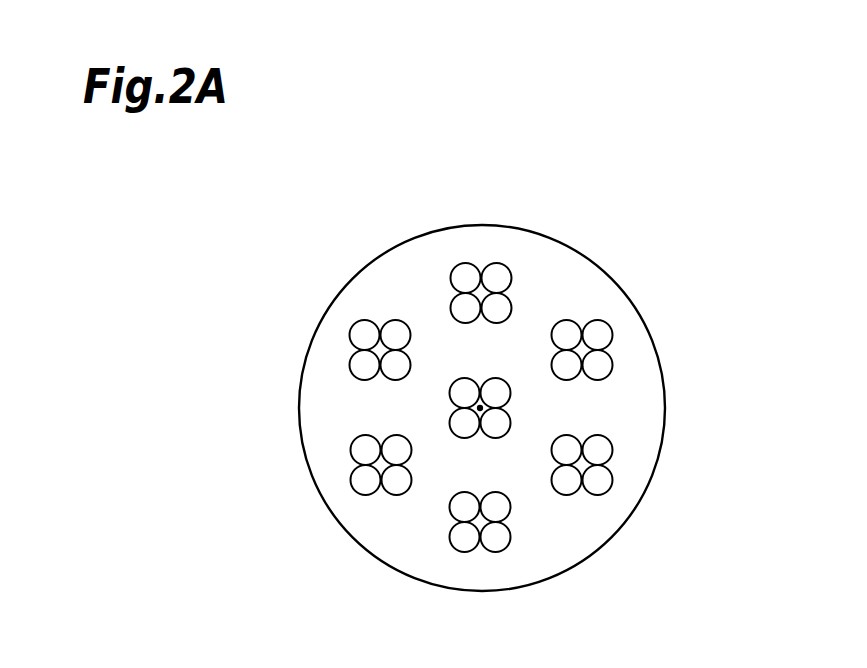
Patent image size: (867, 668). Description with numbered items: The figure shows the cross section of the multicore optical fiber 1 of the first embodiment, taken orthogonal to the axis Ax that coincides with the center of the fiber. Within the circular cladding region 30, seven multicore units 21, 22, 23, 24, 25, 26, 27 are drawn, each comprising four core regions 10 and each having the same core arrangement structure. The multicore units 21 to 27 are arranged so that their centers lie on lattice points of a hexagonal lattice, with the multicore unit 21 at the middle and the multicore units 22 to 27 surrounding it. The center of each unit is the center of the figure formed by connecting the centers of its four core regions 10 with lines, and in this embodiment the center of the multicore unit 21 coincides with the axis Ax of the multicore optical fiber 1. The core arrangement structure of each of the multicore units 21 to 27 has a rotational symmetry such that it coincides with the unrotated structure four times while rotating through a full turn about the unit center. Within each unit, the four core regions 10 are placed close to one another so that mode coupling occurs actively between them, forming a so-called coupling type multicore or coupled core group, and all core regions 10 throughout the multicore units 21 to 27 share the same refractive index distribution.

The multicore optical fiber 1 is at (630, 198).
The core region 10 is at (394, 330).
The multicore unit 21 is at (450, 390).
The multicore unit 22 is at (363, 317).
The multicore unit 23 is at (497, 262).
The multicore unit 24 is at (600, 317).
The multicore unit 25 is at (598, 497).
The multicore unit 26 is at (468, 550).
The multicore unit 27 is at (363, 497).
The cladding region 30 is at (645, 402).
The axis Ax is at (478, 410).